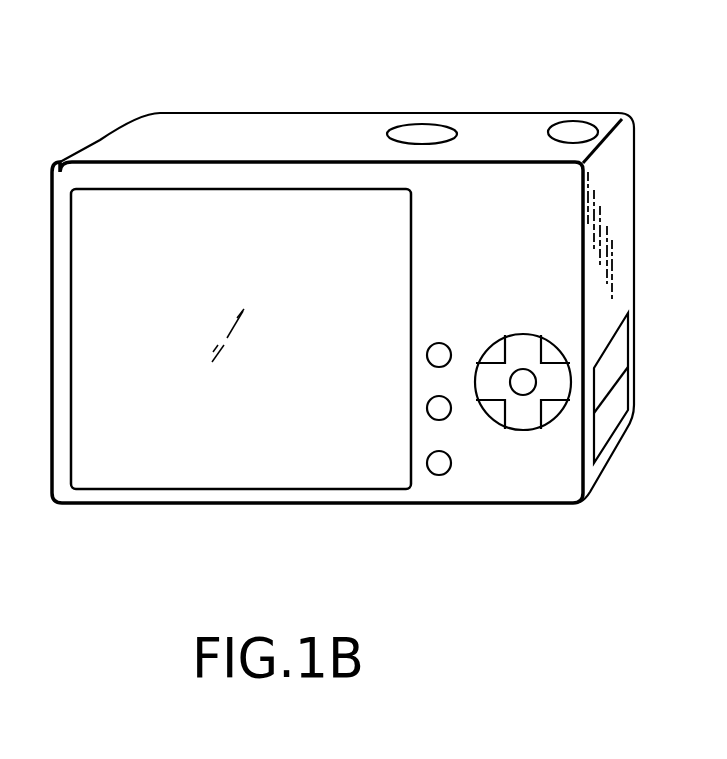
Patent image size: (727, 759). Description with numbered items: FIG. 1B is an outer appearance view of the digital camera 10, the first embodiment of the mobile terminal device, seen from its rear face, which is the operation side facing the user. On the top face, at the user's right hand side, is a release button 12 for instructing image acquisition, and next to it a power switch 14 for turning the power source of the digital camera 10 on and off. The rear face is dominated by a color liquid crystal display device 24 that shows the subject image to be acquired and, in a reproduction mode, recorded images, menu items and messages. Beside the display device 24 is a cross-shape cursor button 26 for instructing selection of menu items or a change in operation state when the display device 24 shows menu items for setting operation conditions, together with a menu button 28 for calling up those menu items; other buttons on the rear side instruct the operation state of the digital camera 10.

The digital camera 10 is at (165, 113).
The release button 12 is at (573, 123).
The power switch 14 is at (422, 125).
The color liquid crystal display device 24 is at (108, 489).
The cross-shape cursor button 26 is at (522, 430).
The menu button 28 is at (437, 475).